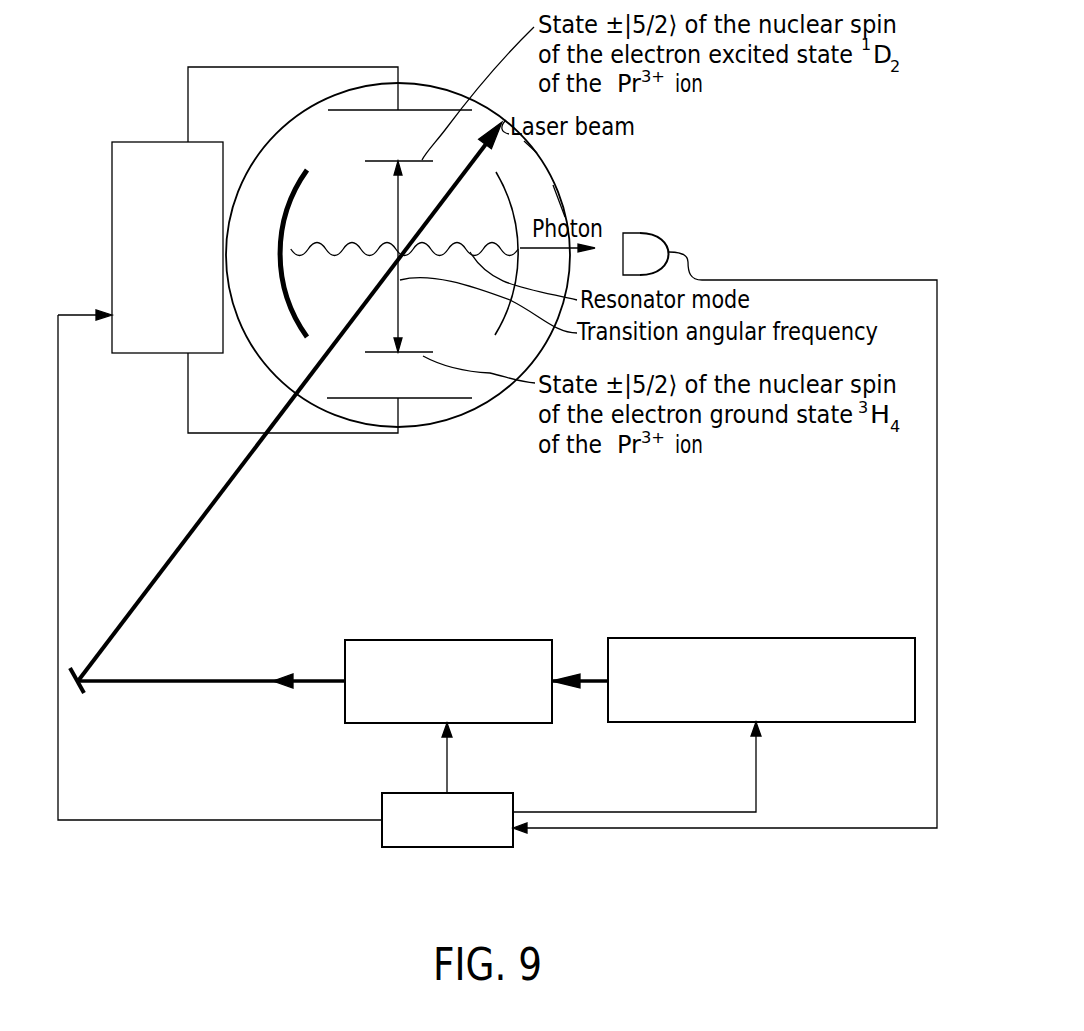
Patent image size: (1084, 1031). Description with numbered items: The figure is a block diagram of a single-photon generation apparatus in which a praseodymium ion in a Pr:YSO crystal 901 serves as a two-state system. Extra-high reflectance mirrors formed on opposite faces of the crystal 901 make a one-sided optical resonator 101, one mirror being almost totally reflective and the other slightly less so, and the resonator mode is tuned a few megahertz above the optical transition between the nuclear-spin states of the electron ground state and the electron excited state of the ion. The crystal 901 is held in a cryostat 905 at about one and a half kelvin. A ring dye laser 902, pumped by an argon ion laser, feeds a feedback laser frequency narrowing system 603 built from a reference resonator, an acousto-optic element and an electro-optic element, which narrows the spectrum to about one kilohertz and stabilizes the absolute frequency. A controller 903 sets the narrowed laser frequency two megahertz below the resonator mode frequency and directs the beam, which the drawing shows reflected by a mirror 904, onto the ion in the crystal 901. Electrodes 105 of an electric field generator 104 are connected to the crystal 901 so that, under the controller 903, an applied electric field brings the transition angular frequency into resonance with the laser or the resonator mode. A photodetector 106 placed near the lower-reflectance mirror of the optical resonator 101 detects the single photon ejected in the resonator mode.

The optical resonator 101 is at (335, 195).
The electric field generator 104 is at (134, 142).
The electrodes 105 is at (435, 110).
The photodetector 106 is at (668, 243).
The feedback laser frequency narrowing system 603 is at (447, 640).
The crystal 901 is at (450, 229).
The ring dye laser 902 is at (850, 722).
The controller 903 is at (447, 850).
The mirror 904 is at (80, 690).
The cryostat 905 is at (473, 413).